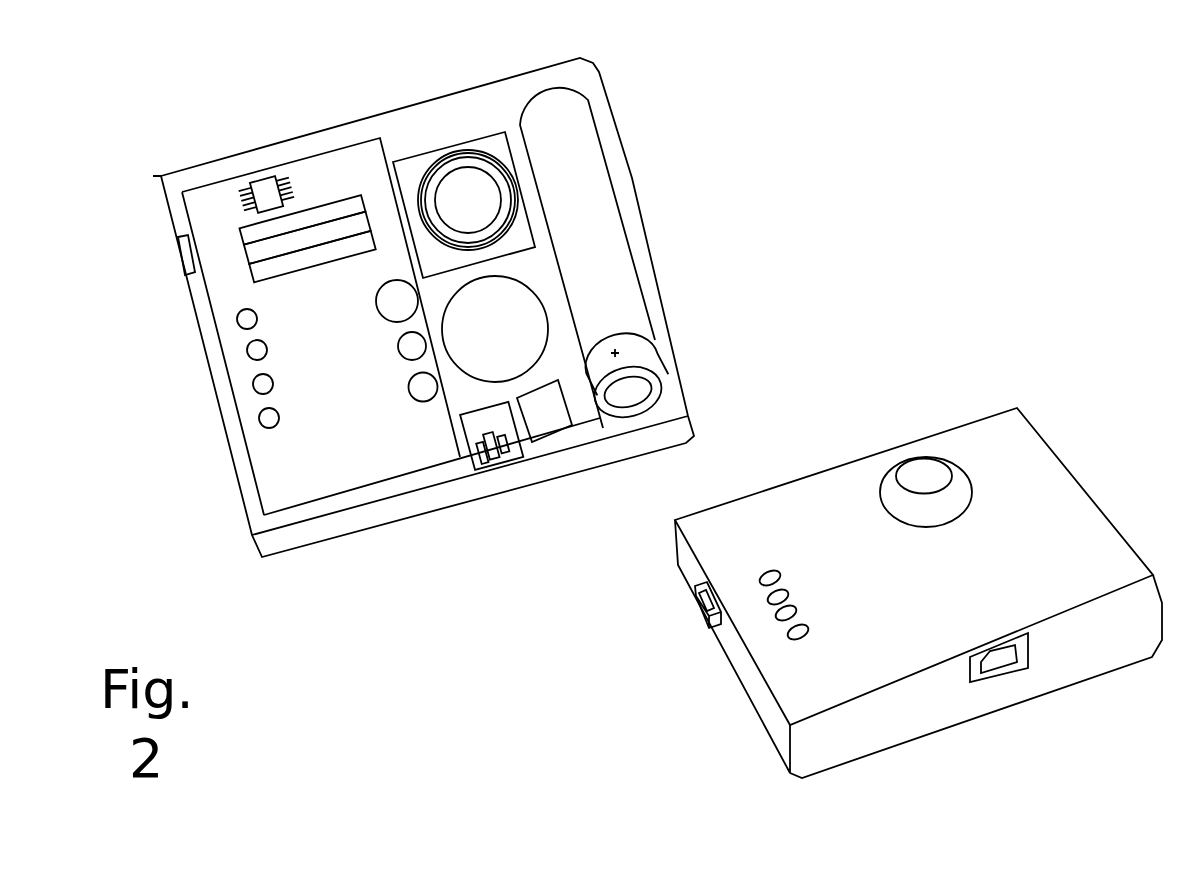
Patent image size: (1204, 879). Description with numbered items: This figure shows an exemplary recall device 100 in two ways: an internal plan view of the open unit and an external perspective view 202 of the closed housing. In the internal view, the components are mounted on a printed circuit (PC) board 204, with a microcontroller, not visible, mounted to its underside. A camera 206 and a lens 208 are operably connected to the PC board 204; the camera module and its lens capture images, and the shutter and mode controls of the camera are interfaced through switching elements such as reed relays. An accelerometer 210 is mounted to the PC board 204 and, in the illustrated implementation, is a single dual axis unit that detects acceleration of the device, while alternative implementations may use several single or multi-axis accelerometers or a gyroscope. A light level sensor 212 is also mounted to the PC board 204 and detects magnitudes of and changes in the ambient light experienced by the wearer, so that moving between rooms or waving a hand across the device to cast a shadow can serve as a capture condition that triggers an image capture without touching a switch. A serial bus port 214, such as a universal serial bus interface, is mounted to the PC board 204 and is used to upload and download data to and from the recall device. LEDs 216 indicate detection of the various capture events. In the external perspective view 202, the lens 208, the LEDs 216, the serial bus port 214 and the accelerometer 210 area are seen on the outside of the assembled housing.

The electronic device 100 is at (749, 98).
The external perspective view 202 is at (610, 767).
The printed circuit (PC) board 204 is at (268, 450).
The camera 206 is at (553, 434).
The lens 208 is at (449, 150).
The accelerometer 210 is at (176, 253).
The light level sensor 212 is at (259, 176).
The serial bus port 214 is at (502, 478).
The LEDs 216 is at (239, 378).